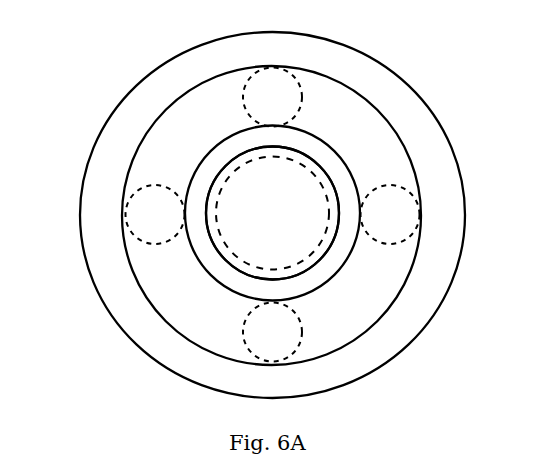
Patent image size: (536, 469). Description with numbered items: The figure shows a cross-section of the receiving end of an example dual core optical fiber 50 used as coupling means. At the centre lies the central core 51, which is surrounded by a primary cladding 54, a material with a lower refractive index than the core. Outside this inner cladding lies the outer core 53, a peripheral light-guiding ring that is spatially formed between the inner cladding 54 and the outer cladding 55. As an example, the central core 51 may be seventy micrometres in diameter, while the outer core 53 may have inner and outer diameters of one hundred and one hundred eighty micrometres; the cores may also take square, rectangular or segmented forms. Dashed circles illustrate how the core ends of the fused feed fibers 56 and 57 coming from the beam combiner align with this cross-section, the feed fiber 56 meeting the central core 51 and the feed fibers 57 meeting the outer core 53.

The dual core optical fiber 50 is at (377, 62).
The central core 51 is at (305, 153).
The outer core 53 is at (175, 127).
The primary cladding 54 is at (232, 275).
The outer cladding 55 is at (105, 245).
The fused feed fiber 56 is at (217, 193).
The fused feed fiber 57 is at (387, 208).